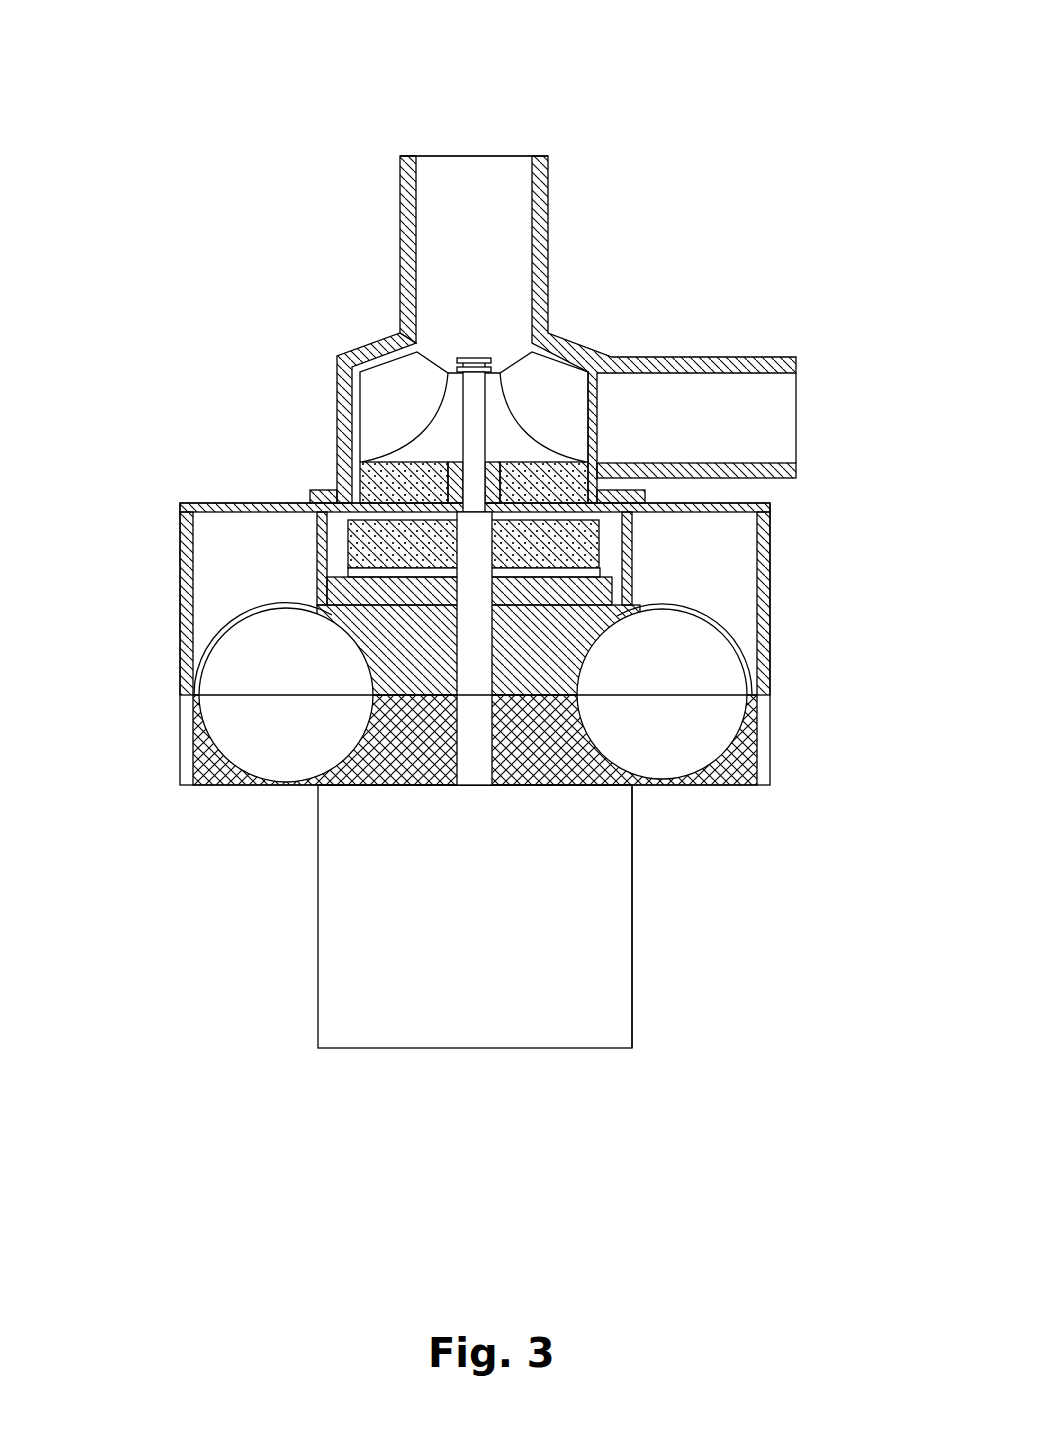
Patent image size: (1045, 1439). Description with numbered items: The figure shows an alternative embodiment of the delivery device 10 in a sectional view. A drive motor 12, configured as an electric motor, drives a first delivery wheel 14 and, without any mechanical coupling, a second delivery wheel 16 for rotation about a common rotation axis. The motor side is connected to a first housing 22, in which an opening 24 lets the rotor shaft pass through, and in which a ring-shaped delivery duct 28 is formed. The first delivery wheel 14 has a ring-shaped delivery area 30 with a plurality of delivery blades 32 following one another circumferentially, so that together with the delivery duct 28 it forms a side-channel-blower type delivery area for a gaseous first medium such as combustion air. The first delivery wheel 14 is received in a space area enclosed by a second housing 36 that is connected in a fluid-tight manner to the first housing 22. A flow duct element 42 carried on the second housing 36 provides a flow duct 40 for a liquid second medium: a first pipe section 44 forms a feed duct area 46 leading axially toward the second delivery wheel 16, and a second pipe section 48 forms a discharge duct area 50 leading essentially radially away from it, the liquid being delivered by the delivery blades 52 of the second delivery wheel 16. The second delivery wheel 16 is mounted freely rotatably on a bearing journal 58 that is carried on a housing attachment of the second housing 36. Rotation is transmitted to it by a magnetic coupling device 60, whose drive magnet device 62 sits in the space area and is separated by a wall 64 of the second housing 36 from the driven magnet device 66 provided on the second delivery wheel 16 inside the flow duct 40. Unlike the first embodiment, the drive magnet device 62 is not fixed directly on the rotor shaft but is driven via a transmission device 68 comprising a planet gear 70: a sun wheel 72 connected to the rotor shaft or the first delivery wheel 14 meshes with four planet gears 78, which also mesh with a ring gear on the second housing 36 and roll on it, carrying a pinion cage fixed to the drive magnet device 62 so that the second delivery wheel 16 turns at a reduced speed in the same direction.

The delivery device 10 is at (785, 98).
The drive motor 12 is at (635, 946).
The first delivery wheel 14 is at (770, 660).
The second delivery wheel 16 is at (390, 357).
The first housing 22 is at (180, 722).
The opening 24 is at (490, 760).
The delivery duct 28 is at (692, 740).
The delivery area 30 is at (730, 633).
The delivery blades 32 is at (712, 677).
The second housing 36 is at (180, 572).
The flow duct 40 is at (459, 116).
The flow duct element 42 is at (571, 341).
The first pipe section 44 is at (400, 170).
The feed duct area 46 is at (500, 175).
The second pipe section 48 is at (762, 357).
The discharge duct area 50 is at (775, 425).
The delivery blades 52 is at (437, 360).
The bearing journal 58 is at (478, 356).
The magnetic coupling device 60 is at (572, 440).
The drive magnet device 62 is at (600, 545).
The wall 64 is at (233, 503).
The driven magnet device 66 is at (360, 475).
The transmission device 68 is at (253, 556).
The planet gear 70 is at (298, 593).
The sun wheel 72 is at (427, 592).
The planet gears 78 is at (385, 592).